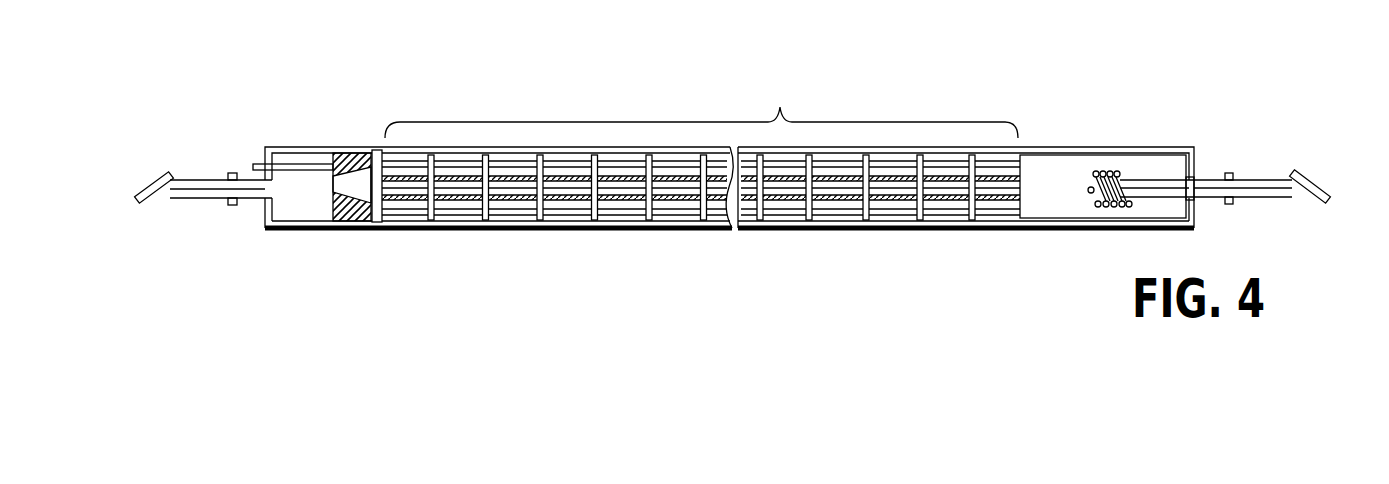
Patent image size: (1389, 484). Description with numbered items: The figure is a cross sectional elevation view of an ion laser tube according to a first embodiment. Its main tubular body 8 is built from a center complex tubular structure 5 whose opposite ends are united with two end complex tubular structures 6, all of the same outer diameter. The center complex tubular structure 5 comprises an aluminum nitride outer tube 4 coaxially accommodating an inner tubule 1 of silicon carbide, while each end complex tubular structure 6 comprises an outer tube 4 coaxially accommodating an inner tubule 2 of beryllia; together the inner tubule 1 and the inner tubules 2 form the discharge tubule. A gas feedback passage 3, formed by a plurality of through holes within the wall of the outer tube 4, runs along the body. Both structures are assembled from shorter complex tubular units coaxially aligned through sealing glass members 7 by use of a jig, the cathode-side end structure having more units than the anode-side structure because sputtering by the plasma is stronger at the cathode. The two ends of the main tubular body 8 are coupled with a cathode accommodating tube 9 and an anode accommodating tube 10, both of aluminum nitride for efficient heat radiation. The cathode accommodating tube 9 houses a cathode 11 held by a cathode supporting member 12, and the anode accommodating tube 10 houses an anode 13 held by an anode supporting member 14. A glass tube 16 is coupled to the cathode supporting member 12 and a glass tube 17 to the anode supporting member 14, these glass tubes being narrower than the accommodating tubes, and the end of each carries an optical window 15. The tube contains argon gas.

The inner tubule 1 is at (613, 180).
The inner tubule 2 is at (410, 178).
The gas feedback passage 3 is at (570, 160).
The outer tube 4 is at (678, 180).
The center complex tubular structure 5 is at (683, 230).
The end complex tubular structure 6 is at (457, 230).
The sealing glass member 7 is at (590, 230).
The main tubular body 8 is at (701, 105).
The cathode accommodating tube 9 is at (1037, 150).
The anode accommodating tube 10 is at (362, 147).
The cathode 11 is at (1118, 173).
The cathode supporting member 12 is at (1197, 175).
The anode 13 is at (343, 152).
The anode supporting member 14 is at (260, 163).
The optical window 15 is at (140, 190).
The glass tube 16 is at (1263, 178).
The glass tube 17 is at (180, 180).